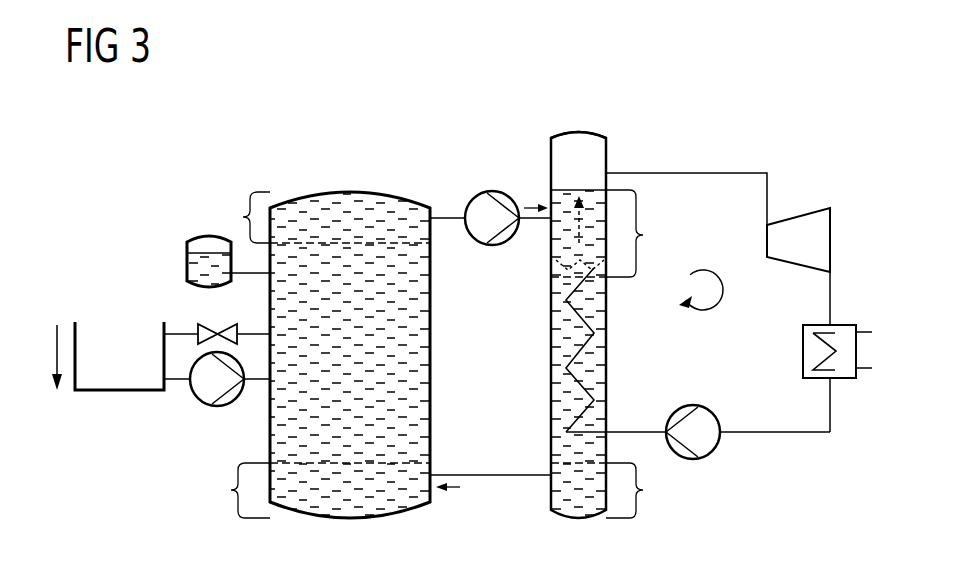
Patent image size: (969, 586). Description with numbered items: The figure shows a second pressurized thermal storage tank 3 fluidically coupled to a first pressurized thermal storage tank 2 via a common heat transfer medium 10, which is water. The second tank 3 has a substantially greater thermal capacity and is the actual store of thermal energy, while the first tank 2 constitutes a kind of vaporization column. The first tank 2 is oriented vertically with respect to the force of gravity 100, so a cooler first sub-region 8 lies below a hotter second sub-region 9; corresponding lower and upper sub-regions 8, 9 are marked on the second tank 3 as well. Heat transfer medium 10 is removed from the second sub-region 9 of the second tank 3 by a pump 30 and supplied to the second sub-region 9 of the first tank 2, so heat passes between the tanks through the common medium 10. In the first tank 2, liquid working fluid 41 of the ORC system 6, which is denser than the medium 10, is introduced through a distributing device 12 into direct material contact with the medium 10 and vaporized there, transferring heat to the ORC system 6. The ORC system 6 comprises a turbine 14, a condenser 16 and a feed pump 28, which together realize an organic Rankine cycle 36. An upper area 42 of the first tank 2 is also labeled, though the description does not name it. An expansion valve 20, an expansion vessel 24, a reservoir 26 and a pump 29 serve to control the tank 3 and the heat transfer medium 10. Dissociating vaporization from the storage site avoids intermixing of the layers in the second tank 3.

The first pressurized thermal storage tank 2 is at (602, 136).
The second pressurized thermal storage tank 3 is at (388, 192).
The ORC system 6 is at (747, 124).
The first sub-region 8 is at (437, 490).
The second sub-region 9 is at (446, 233).
The heat transfer medium 10 is at (430, 366).
The distributing device 12 is at (583, 332).
The turbine 14 is at (803, 210).
The condenser 16 is at (803, 356).
The expansion valve 20 is at (198, 327).
The expansion vessel 24 is at (187, 258).
The reservoir 26 is at (133, 392).
The feed pump 28 is at (700, 458).
The pump 29 is at (200, 403).
The pump 30 is at (502, 192).
The organic Rankine cycle 36 is at (703, 270).
The working fluid 41 is at (579, 243).
The vapor space 42 is at (576, 139).
The force of gravity 100 is at (56, 366).